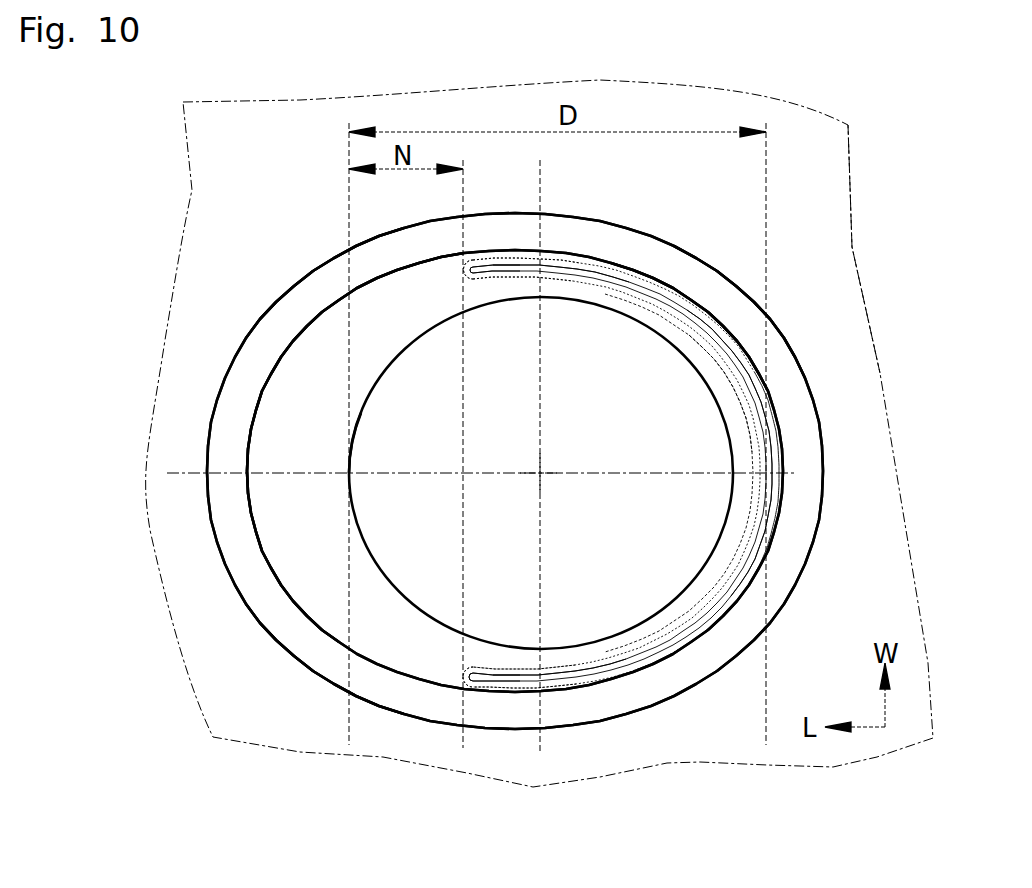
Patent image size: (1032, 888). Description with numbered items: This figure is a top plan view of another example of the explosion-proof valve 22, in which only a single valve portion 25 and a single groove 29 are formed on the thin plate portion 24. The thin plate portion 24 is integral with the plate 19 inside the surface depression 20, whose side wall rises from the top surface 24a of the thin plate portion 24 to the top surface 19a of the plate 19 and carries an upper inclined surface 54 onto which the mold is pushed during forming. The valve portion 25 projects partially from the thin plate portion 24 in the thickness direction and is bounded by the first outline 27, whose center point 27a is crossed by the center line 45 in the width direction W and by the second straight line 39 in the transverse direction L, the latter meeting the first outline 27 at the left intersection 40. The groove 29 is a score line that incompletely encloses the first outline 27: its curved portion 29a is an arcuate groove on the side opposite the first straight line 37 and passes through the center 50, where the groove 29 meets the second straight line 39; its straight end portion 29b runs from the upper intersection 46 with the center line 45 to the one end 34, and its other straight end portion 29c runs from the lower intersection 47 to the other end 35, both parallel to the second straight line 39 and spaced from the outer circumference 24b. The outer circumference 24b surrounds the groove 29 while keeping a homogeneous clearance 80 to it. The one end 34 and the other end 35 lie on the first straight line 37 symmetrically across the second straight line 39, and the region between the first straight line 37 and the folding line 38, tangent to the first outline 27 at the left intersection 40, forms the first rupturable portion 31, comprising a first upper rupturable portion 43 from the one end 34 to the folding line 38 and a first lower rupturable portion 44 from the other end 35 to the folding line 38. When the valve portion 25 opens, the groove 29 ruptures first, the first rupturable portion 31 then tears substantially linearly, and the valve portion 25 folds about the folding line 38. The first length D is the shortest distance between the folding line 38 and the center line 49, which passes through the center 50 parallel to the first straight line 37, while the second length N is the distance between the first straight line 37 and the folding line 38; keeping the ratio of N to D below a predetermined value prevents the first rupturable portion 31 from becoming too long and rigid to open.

The plate 19 is at (185, 210).
The top surface 19a is at (813, 163).
The surface depression 20 is at (637, 227).
The explosion-proof valve 22 is at (300, 597).
The thin plate portion 24 is at (305, 385).
The top surface 24a is at (297, 535).
The outer circumference 24b is at (697, 297).
The valve portion 25 is at (725, 420).
The first outline 27 is at (365, 540).
The center point 27a is at (543, 470).
The groove 29 is at (732, 590).
The curved portion 29a is at (760, 565).
The straight end portion 29b is at (495, 258).
The other straight end portion 29c is at (493, 690).
The first rupturable portion 31 is at (360, 365).
The one end 34 is at (462, 270).
The other end 35 is at (463, 677).
The first straight line 37 is at (462, 739).
The folding line 38 is at (349, 200).
The second straight line 39 is at (295, 473).
The left intersection 40 is at (349, 473).
The first upper rupturable portion 43 is at (392, 318).
The first lower rupturable portion 44 is at (395, 632).
The center line 45 is at (540, 180).
The upper intersection 46 is at (540, 268).
The lower intersection 47 is at (545, 680).
The center line 49 is at (766, 200).
The center 50 is at (770, 460).
The upper inclined surface 54 is at (747, 327).
The clearance 80 is at (760, 373).